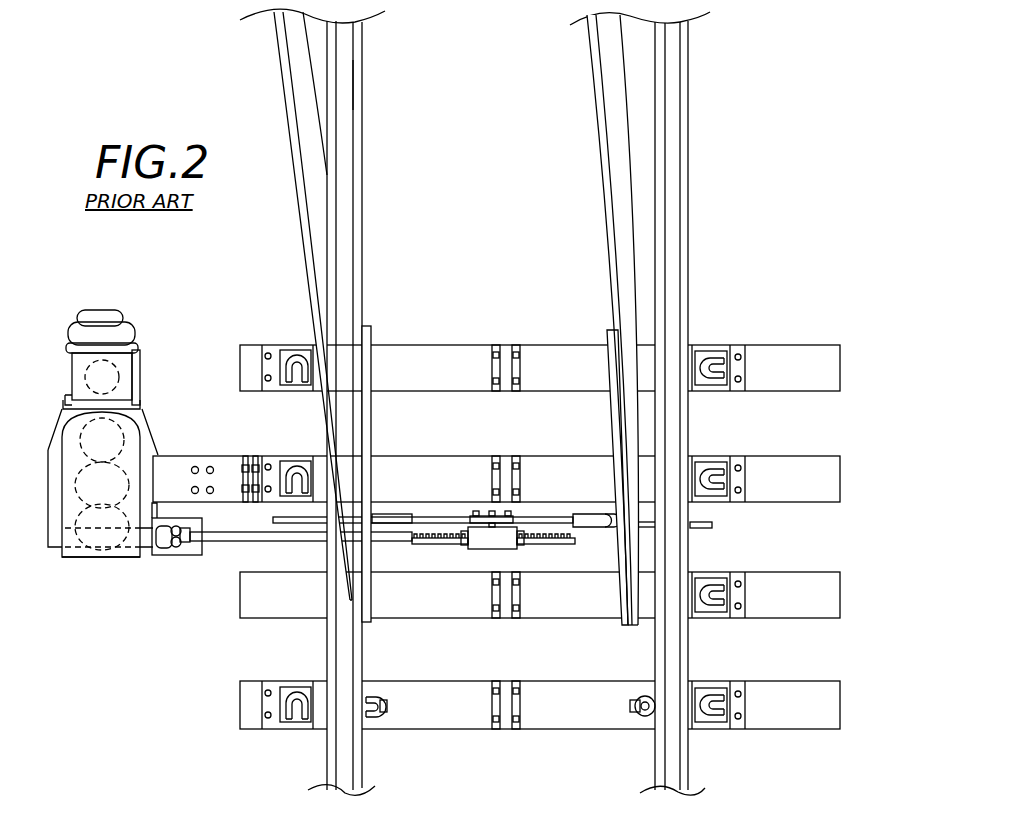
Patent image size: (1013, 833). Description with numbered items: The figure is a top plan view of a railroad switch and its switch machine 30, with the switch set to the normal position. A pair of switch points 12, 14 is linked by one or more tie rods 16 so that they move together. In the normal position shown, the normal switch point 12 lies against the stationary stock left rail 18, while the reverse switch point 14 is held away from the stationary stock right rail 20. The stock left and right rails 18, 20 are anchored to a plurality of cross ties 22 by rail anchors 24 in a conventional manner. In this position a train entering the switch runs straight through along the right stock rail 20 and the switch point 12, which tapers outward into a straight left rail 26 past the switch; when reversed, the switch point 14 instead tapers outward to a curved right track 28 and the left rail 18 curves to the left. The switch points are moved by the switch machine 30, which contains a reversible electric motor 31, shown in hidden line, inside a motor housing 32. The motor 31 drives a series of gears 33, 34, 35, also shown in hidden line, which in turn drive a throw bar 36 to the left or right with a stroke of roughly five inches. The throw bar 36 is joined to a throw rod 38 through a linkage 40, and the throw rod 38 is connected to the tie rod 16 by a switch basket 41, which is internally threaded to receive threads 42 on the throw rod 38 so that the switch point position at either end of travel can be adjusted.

The switch point 12 is at (355, 418).
The switch point 14 is at (635, 417).
The tie rod 16 is at (590, 518).
The stock left rail 18 is at (298, 62).
The stock right rail 20 is at (672, 139).
The cross ties 22 is at (415, 345).
The rail anchors 24 is at (291, 348).
The straight left rail 26 is at (345, 78).
The curved right track 28 is at (617, 133).
The switch machine 30 is at (152, 330).
The reversible electric motor 31 is at (134, 379).
The motor housing 32 is at (85, 362).
The gear 33 is at (137, 437).
The gear 34 is at (70, 455).
The gear 35 is at (73, 548).
The throw bar 36 is at (128, 548).
The throw rod 38 is at (243, 541).
The linkage 40 is at (174, 542).
The switch basket 41 is at (479, 546).
The threads 42 is at (428, 546).